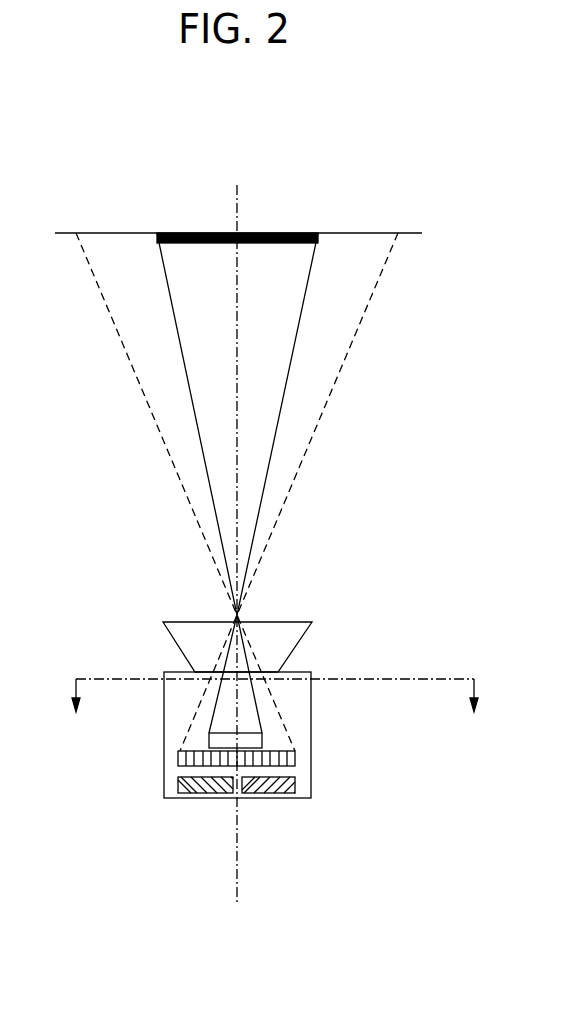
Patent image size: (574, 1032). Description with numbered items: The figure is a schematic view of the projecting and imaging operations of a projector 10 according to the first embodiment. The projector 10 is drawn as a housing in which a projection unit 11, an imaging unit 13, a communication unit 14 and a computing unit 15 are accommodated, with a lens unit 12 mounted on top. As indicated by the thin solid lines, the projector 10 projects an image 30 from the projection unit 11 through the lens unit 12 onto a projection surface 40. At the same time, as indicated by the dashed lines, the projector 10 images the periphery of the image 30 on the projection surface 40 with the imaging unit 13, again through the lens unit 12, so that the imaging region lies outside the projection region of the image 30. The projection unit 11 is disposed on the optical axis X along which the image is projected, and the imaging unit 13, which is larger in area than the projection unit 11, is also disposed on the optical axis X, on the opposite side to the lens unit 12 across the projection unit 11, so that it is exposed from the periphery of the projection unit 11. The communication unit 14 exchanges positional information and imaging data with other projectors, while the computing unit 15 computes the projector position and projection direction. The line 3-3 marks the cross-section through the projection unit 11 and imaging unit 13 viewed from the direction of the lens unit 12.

The projector 10 is at (318, 786).
The projection unit 11 is at (262, 741).
The lens unit 12 is at (293, 653).
The imaging unit 13 is at (295, 757).
The communication unit 14 is at (268, 793).
The computing unit 15 is at (207, 793).
The image 30 is at (200, 232).
The projection surface 40 is at (122, 232).
The optical axis X is at (237, 450).
The line 3- 3 is at (276, 680).